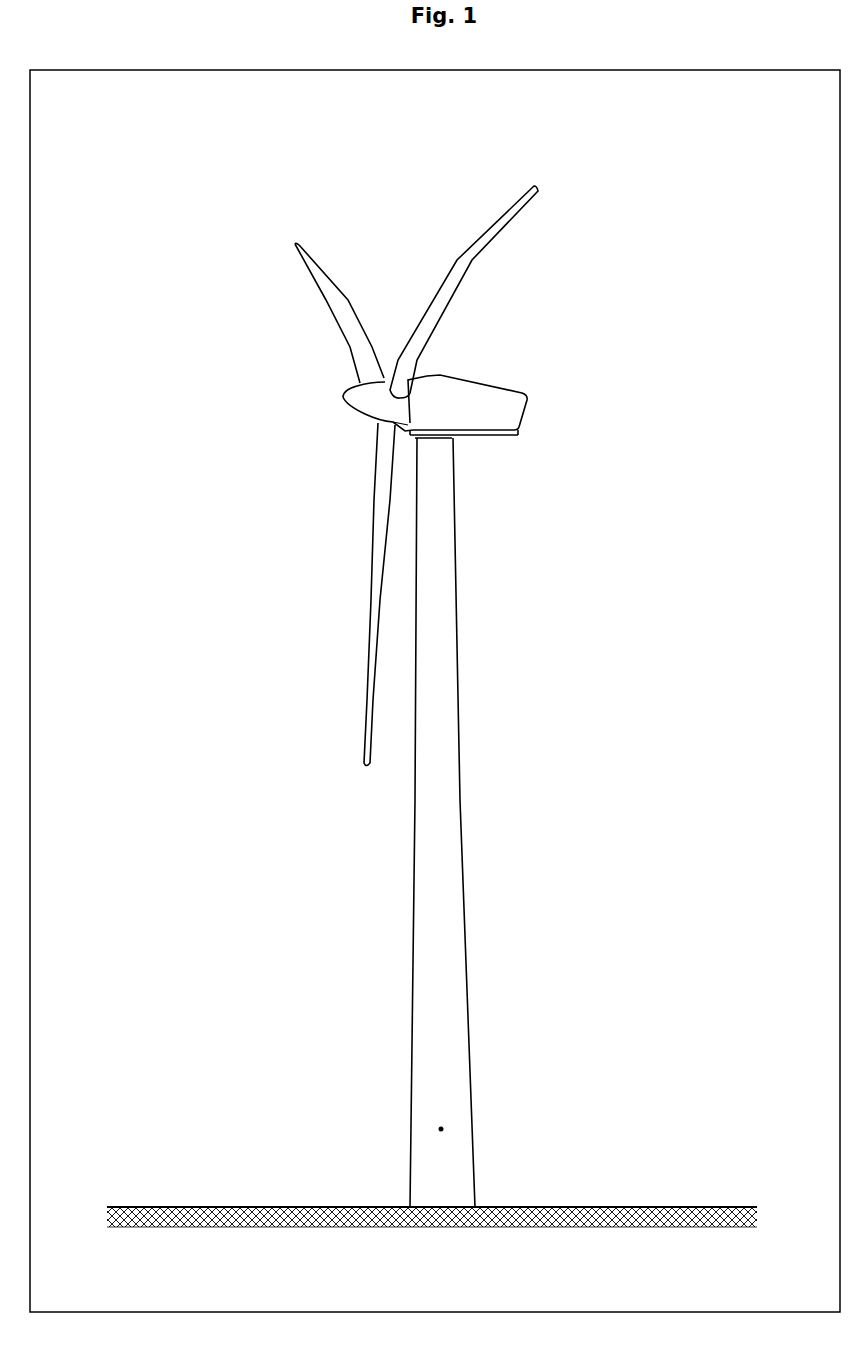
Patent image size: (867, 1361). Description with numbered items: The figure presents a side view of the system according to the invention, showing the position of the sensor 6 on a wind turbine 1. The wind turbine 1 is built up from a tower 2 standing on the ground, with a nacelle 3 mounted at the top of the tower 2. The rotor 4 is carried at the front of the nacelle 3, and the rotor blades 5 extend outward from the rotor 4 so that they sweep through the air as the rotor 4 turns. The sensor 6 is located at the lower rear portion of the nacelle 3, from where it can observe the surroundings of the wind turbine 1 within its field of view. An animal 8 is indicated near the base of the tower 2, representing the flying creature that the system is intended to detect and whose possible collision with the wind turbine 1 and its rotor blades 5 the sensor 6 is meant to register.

The wind turbine 1 is at (325, 393).
The tower 2 is at (452, 897).
The nacelle 3 is at (503, 393).
The rotor 4 is at (348, 248).
The rotor blades 5 is at (363, 710).
The sensor 6 is at (497, 433).
The animal 8 is at (440, 1128).